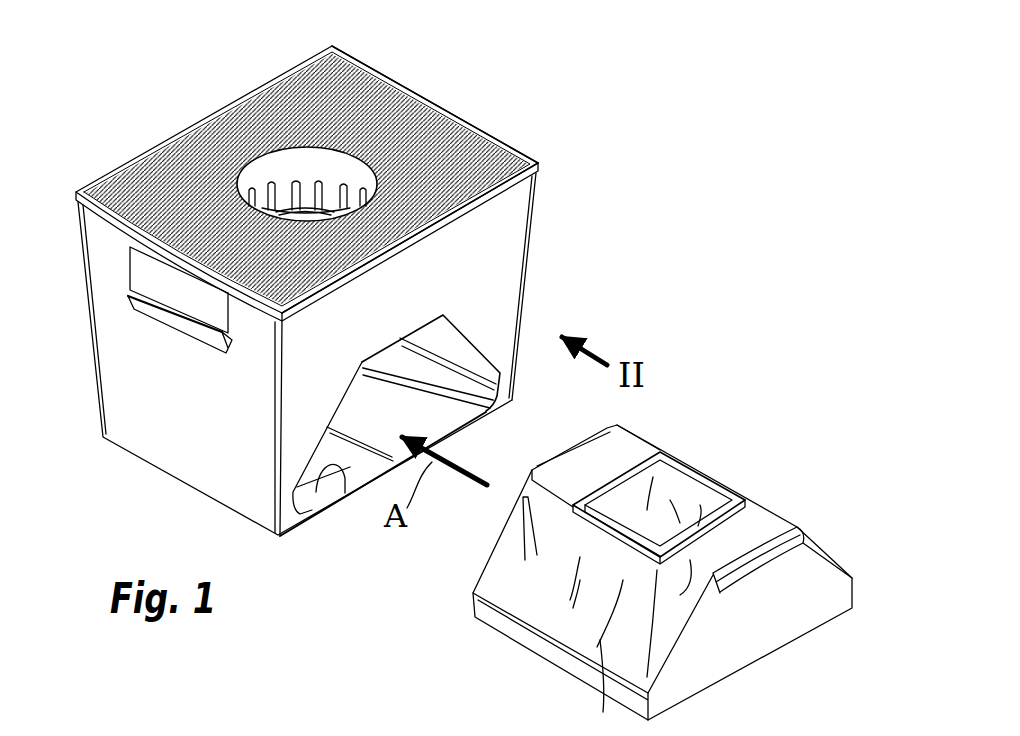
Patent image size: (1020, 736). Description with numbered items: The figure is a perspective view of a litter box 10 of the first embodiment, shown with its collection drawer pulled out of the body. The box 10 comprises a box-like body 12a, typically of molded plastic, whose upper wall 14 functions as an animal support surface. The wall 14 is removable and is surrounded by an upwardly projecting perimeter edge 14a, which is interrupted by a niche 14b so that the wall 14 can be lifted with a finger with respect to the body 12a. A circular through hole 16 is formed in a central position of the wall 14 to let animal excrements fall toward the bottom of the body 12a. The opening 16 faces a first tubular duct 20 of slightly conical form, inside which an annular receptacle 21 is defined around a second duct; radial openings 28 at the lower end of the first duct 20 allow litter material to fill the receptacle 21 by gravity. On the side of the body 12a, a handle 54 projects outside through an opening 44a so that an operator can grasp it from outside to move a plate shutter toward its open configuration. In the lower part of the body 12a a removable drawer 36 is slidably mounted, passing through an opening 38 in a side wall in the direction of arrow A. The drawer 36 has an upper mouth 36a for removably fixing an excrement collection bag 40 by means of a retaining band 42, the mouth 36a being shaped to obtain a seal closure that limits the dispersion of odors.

The box 10 is at (560, 127).
The body 12a is at (530, 291).
The upper wall 14 is at (405, 113).
The perimeter edge 14a is at (480, 120).
The niche 14b is at (410, 246).
The through hole 16 is at (334, 148).
The first tubular duct 20 is at (248, 184).
The annular receptacle 21 is at (326, 196).
The radial openings 28 is at (302, 180).
The drawer 36 is at (803, 577).
The upper mouth 36a is at (676, 473).
The opening 38 is at (347, 493).
The excrement collection bag 40 is at (555, 600).
The retaining band 42 is at (593, 525).
The opening 44a is at (210, 357).
The handle 54 is at (172, 322).